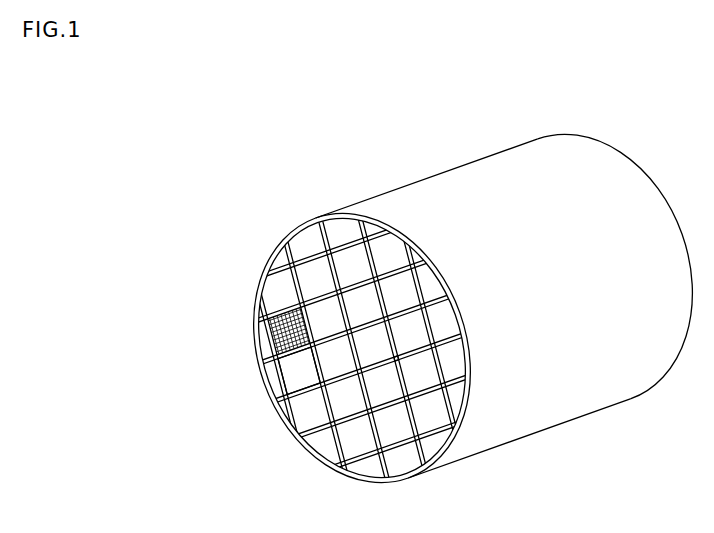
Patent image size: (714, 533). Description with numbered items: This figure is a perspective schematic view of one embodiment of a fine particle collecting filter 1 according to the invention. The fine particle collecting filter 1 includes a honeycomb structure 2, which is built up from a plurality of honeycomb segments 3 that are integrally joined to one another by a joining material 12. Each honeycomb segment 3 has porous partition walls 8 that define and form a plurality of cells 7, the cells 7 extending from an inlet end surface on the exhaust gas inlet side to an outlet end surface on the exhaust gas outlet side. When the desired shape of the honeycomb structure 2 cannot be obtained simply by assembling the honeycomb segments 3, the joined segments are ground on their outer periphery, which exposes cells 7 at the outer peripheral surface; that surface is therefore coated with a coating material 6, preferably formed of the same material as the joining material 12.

The fine particle collecting filter 1 is at (620, 91).
The honeycomb structure 2 is at (515, 291).
The honeycomb segment 3 is at (299, 370).
The coating material 6 is at (262, 344).
The cell 7 is at (313, 295).
The porous partition wall 8 is at (288, 331).
The joining material 12 is at (396, 358).